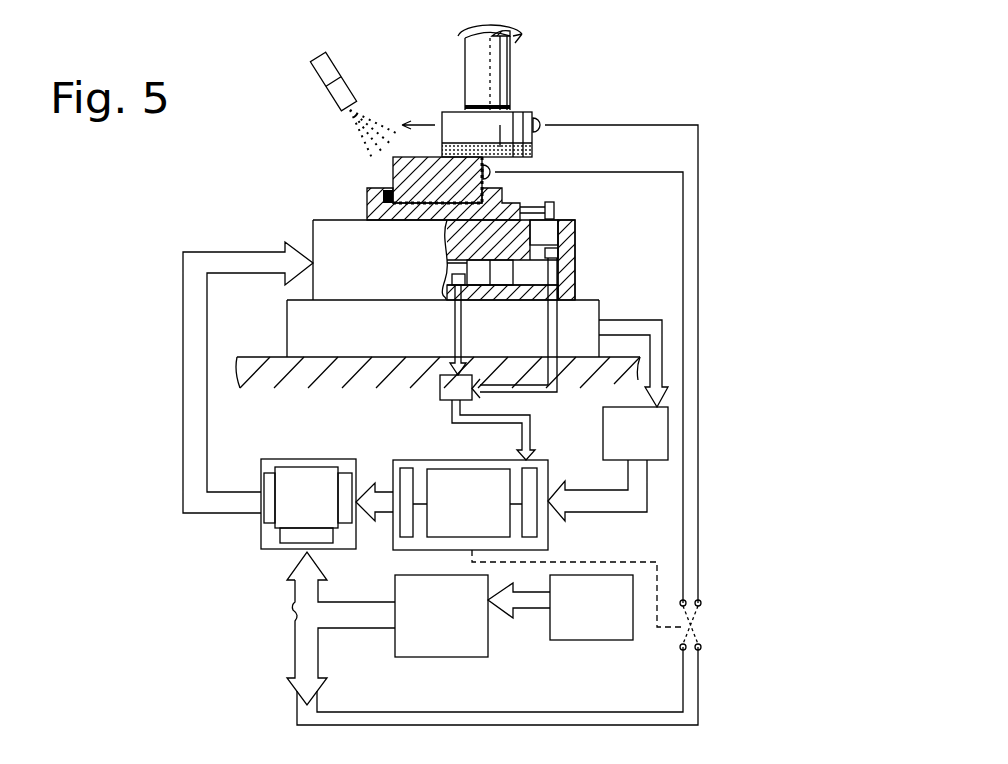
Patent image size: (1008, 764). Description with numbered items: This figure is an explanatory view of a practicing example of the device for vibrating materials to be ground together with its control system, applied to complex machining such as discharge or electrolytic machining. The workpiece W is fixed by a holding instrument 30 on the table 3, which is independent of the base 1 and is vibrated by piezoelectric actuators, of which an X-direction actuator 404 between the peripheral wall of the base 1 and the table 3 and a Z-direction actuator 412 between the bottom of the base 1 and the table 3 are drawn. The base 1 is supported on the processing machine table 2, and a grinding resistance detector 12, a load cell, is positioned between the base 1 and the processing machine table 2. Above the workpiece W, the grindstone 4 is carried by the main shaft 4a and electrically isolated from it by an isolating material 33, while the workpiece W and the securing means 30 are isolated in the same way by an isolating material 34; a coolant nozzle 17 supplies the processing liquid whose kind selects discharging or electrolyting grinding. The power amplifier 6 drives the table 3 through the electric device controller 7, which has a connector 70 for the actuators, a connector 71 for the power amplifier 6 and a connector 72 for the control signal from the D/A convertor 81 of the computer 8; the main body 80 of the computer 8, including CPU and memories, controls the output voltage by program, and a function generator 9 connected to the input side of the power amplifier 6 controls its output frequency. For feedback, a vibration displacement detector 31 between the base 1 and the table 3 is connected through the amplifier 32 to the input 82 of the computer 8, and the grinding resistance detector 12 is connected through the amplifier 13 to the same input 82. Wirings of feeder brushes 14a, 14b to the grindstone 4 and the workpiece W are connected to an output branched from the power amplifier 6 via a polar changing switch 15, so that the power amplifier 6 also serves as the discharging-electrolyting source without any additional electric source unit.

The base 1 is at (565, 273).
The processing machine table 2 is at (275, 365).
The table 3 is at (523, 232).
The grindstone 4 is at (518, 118).
The main shaft 4a is at (468, 63).
The power amplifier 6 is at (433, 625).
The electric device controller 7 is at (309, 505).
The computer 8 is at (548, 534).
The function generator 9 is at (582, 618).
The grinding resistance detector 12 is at (293, 313).
The amplifier 13 is at (618, 412).
The feeder brush 14a is at (540, 120).
The feeder brush 14b is at (493, 165).
The polar changing switch 15 is at (702, 628).
The coolant nozzle 17 is at (343, 88).
The holding instrument 30 is at (413, 190).
The vibration displacement detector 31 is at (447, 285).
The amplifier 32 is at (478, 378).
The isolating material 33 is at (468, 100).
The isolating material 34 is at (380, 202).
The connector 70 is at (267, 485).
The connector 71 is at (288, 541).
The connector 72 is at (345, 480).
The main body 80 is at (440, 478).
The D/A convertor 81 is at (405, 473).
The input 82 is at (533, 480).
The piezoelectric actuator 404 is at (545, 237).
The piezoelectric actuator 412 is at (507, 273).
The workpiece W is at (400, 168).